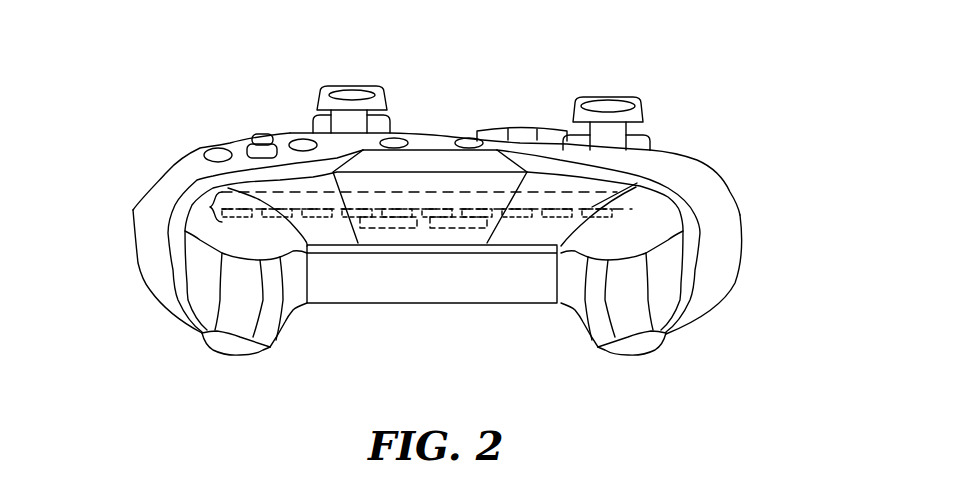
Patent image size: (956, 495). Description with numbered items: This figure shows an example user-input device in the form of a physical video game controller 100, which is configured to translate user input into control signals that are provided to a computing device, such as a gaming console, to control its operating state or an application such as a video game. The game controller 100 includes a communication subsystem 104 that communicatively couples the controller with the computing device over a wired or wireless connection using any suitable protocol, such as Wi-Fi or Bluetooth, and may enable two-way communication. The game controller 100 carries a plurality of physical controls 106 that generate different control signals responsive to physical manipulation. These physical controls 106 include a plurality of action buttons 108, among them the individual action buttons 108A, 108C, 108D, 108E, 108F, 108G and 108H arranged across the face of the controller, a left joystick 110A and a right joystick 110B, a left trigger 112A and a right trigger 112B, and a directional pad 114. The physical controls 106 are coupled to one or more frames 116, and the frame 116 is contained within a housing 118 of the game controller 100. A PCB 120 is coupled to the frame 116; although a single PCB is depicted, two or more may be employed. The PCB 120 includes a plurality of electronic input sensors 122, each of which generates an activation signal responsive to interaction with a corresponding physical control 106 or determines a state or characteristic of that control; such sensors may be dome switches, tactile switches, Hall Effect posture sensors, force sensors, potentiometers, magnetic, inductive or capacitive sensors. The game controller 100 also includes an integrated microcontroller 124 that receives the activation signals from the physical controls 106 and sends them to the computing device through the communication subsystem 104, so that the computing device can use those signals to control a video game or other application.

The game controller 100 is at (147, 42).
The communication subsystem 104 is at (738, 213).
The physical controls 106 is at (753, 152).
The action buttons 108 is at (697, 159).
The action button 108A is at (168, 233).
The action button 108C is at (302, 142).
The action button 108D is at (260, 137).
The action button 108E is at (204, 153).
The action button 108F is at (250, 150).
The action button 108G is at (467, 140).
The action button 108H is at (394, 140).
The left joystick 110A is at (641, 106).
The right joystick 110B is at (357, 92).
The left trigger 112A is at (628, 356).
The right trigger 112B is at (240, 356).
The directional pad 114 is at (523, 131).
The frame 116 is at (185, 231).
The housing 118 is at (145, 194).
The PCB 120 is at (633, 192).
The electronic input sensors 122 is at (585, 236).
The integrated microcontroller 124 is at (388, 229).